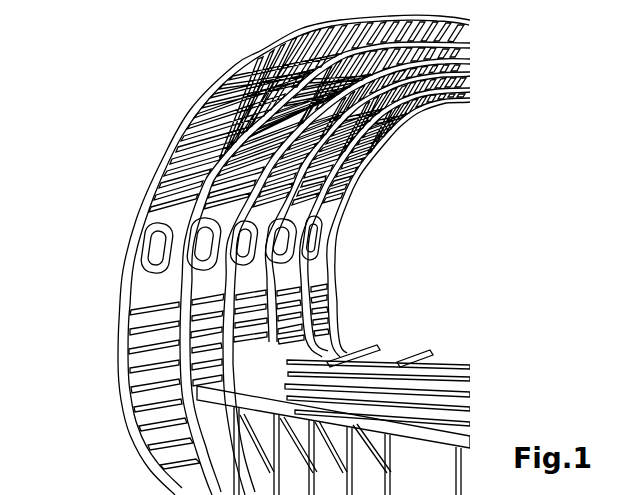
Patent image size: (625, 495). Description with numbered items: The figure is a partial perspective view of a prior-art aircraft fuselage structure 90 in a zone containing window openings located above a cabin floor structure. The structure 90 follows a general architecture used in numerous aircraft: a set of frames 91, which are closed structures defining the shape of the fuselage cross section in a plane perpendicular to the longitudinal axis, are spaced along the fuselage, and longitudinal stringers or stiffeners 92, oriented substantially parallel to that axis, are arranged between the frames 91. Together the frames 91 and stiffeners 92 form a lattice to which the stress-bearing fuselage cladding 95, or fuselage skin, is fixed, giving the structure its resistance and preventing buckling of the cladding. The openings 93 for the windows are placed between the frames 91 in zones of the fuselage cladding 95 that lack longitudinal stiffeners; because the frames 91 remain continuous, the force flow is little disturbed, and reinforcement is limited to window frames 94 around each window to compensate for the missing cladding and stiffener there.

The structure 90 is at (111, 95).
The frames 91 is at (333, 249).
The longitudinal stringers or stiffeners 92 is at (188, 162).
The openings 93 is at (150, 256).
The window frames 94 is at (145, 246).
The fuselage cladding 95 is at (137, 363).